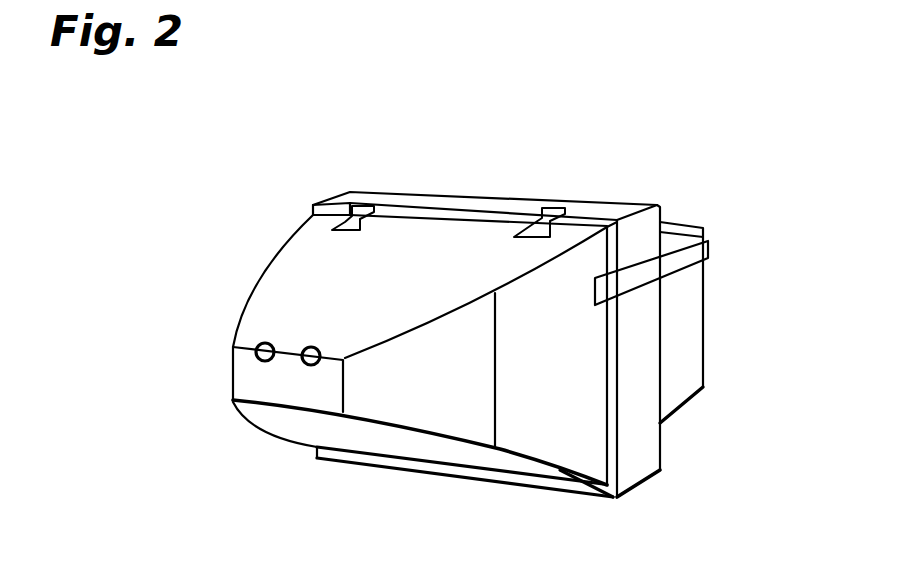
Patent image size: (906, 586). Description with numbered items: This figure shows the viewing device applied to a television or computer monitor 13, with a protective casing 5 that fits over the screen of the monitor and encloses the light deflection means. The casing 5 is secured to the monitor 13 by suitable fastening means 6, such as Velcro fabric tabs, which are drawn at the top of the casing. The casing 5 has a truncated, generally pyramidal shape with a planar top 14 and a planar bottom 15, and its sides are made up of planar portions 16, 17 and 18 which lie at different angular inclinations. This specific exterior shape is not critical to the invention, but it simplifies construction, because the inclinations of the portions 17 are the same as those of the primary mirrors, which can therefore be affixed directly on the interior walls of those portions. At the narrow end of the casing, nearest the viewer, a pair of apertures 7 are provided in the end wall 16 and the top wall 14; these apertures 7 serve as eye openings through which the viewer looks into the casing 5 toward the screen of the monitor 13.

The protective casing 5 is at (316, 248).
The fastening means 6 is at (377, 195).
The apertures 7 is at (312, 345).
The television or computer monitor 13 is at (647, 445).
The planar top 14 is at (273, 278).
The planar bottom 15 is at (283, 420).
The end wall planar portion 16 is at (247, 377).
The inclined side planar portions 17 is at (405, 405).
The side planar portion 18 is at (560, 442).